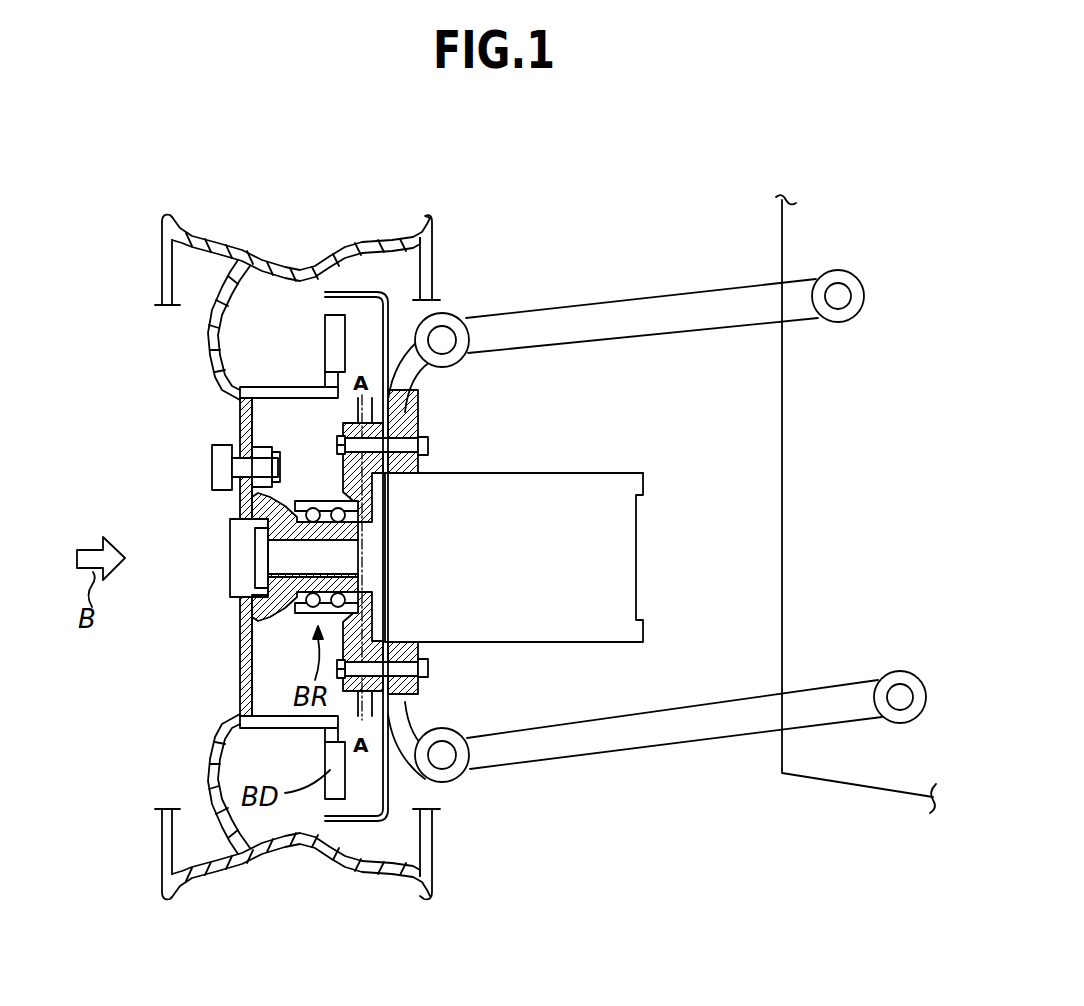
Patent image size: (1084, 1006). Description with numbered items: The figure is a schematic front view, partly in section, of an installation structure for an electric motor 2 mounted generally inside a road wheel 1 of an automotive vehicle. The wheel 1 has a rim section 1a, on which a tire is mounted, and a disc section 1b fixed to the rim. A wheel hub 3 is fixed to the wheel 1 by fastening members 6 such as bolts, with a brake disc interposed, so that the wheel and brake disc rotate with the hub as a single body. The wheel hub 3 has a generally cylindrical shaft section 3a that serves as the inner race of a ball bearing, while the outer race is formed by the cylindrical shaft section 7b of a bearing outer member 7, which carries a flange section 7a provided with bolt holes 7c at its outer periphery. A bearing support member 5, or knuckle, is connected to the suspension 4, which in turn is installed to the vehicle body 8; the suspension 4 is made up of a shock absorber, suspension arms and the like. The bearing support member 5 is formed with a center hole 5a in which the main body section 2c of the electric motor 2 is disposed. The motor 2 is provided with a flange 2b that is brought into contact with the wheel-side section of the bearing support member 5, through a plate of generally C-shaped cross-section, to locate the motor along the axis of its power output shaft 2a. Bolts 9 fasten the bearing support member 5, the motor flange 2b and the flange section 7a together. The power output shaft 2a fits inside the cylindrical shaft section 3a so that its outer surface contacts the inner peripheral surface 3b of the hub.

The road wheel 1 is at (212, 268).
The rim section 1a is at (403, 256).
The disc section 1b is at (205, 332).
The electric motor 2 is at (557, 645).
The power output shaft 2a is at (283, 566).
The flange 2b is at (380, 414).
The main body section 2c is at (580, 473).
The wheel hub 3 is at (266, 436).
The cylindrical shaft section 3a is at (262, 603).
The inner peripheral surface 3b is at (264, 553).
The suspension 4 is at (711, 300).
The bearing support member 5 is at (432, 420).
The center hole 5a is at (418, 641).
The fastening member 6 is at (216, 470).
The bearing outer member 7 is at (320, 486).
The flange section 7a is at (345, 690).
The cylindrical shaft section 7b is at (296, 618).
The bolt hole 7c is at (333, 442).
The vehicle body 8 is at (857, 777).
The bolt 9 is at (430, 444).